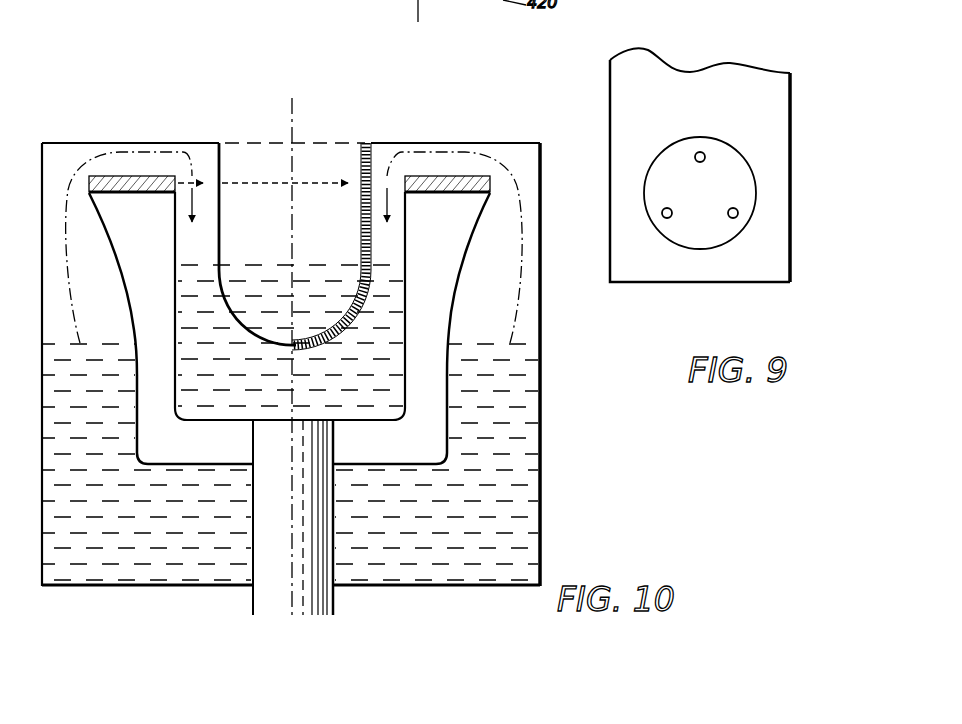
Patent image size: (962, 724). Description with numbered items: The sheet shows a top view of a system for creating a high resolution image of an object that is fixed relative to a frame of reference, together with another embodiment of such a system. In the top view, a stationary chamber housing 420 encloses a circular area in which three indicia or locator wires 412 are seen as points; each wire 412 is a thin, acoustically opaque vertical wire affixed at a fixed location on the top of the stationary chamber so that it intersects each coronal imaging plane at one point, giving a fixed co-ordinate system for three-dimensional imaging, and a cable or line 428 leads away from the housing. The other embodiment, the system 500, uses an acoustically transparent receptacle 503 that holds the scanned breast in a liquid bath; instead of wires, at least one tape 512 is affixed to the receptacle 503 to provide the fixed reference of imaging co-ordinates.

In FIG. 10, the cooling system 500 is at (130, 113).
In FIG. 10, the receptacle 503 is at (222, 213).
In FIG. 10, the tape 512 is at (361, 164).
In FIG. 9, the locator wire 412 is at (695, 160).
In FIG. 9, the connector housing 420 is at (747, 136).
In FIG. 9, the cable 428 is at (609, 217).